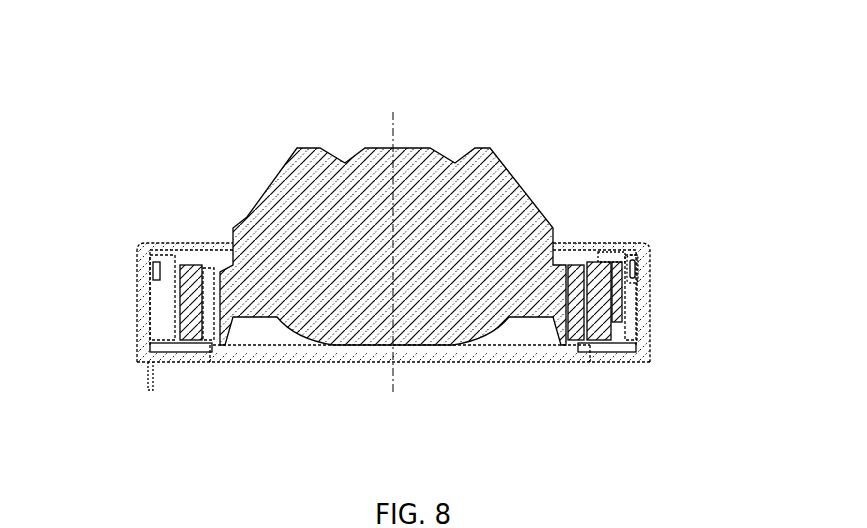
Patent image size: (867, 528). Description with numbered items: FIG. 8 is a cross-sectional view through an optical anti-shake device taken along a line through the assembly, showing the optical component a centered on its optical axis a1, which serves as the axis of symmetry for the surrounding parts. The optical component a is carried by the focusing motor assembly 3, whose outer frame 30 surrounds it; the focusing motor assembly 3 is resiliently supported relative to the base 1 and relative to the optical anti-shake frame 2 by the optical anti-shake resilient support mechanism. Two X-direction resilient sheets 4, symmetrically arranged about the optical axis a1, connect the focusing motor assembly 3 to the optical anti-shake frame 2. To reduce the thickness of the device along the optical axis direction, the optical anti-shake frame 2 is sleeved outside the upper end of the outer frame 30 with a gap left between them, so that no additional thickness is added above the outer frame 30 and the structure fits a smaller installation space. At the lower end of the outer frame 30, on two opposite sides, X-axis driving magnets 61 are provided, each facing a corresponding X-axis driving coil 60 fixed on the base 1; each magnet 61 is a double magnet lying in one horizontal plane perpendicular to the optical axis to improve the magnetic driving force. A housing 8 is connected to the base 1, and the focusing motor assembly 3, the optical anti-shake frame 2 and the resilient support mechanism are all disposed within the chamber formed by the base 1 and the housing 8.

The optical component a is at (278, 205).
The optical axis a1 is at (390, 138).
The base 1 is at (613, 365).
The optical anti-shake frame 2 is at (623, 260).
The focusing motor assembly 3 is at (578, 267).
The X-direction resilient sheet 4 is at (640, 288).
The housing 8 is at (642, 247).
The outer frame 30 is at (617, 300).
The X-axis driving coil 60 is at (165, 345).
The X-axis driving magnet 61 is at (190, 297).